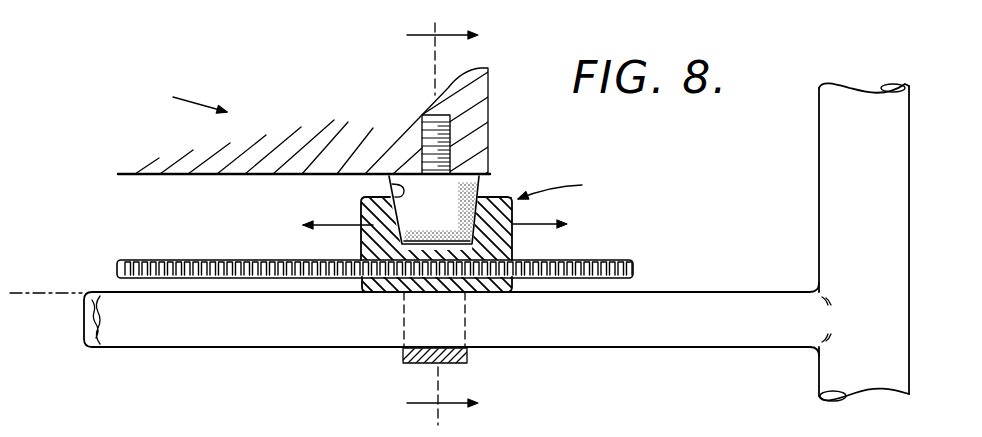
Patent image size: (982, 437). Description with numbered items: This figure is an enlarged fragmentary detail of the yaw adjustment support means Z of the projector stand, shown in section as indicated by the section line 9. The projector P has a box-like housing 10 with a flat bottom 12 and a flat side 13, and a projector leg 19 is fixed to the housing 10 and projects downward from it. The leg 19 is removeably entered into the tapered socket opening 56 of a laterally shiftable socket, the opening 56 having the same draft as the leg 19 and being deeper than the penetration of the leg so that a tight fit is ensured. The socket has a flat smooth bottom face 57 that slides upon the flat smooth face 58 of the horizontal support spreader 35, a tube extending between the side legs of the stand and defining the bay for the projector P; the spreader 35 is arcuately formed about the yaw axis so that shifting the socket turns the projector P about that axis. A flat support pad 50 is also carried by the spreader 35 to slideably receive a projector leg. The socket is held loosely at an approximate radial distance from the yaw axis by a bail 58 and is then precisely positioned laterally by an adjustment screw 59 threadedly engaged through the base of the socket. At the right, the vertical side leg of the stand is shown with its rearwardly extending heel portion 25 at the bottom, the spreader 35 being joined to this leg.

The section line 9- 9 is at (422, 223).
The housing 10 is at (381, 112).
The flat bottom 12 is at (203, 177).
The flat side 13 is at (492, 124).
The projector leg 19 is at (478, 182).
The heel portion 25 is at (833, 158).
The support spreader 35 is at (598, 332).
The support pad 50 is at (513, 246).
The socket opening 56 is at (391, 186).
The bottom face 57 is at (378, 296).
The bail 58 is at (455, 365).
The adjustment screw 59 is at (192, 258).
The projector P is at (188, 91).
The yaw adjustment support means Z is at (559, 184).